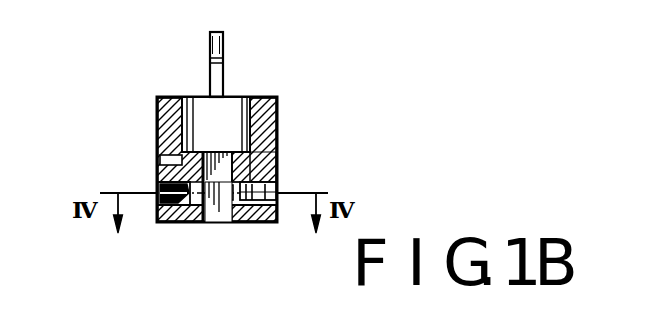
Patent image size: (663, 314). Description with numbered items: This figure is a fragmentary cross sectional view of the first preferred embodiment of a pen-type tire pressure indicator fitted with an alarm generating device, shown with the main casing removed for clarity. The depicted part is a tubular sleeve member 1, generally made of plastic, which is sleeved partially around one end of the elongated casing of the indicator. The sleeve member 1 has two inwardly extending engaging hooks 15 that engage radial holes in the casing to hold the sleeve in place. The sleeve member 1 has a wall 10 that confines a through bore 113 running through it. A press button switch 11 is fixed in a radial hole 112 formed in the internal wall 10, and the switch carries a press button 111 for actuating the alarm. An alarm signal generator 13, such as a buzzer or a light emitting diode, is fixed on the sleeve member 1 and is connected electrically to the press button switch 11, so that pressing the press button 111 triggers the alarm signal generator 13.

The tubular sleeve member 1 is at (139, 89).
The wall 10 is at (157, 128).
The press button switch 11 is at (248, 222).
The alarm signal generator 13 is at (166, 222).
The engaging hook 15 is at (220, 50).
The press button 111 is at (218, 222).
The radial hole 112 is at (296, 164).
The through bore 113 is at (288, 152).